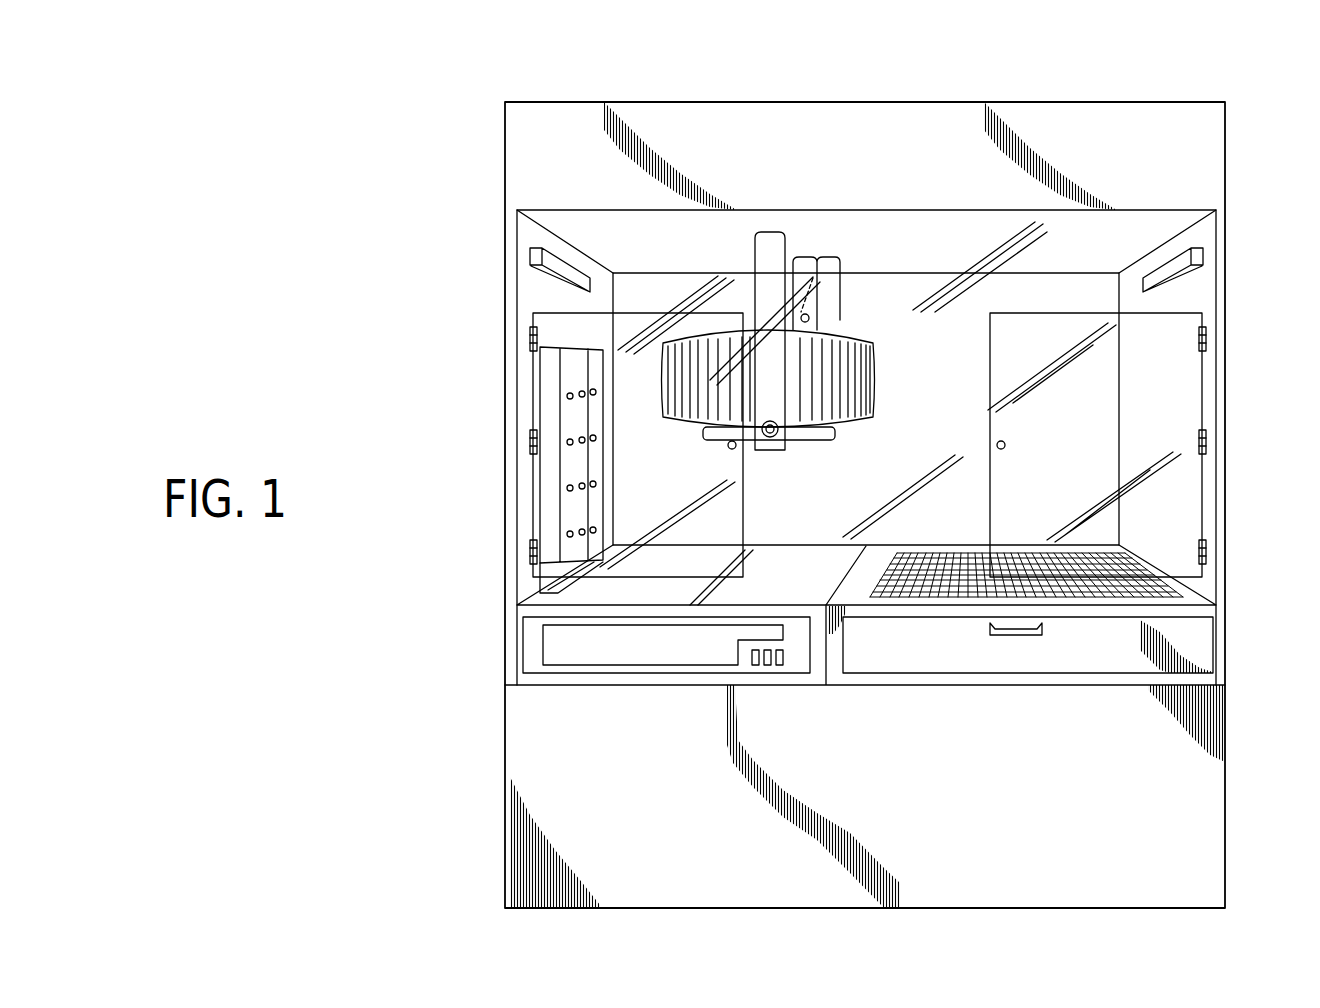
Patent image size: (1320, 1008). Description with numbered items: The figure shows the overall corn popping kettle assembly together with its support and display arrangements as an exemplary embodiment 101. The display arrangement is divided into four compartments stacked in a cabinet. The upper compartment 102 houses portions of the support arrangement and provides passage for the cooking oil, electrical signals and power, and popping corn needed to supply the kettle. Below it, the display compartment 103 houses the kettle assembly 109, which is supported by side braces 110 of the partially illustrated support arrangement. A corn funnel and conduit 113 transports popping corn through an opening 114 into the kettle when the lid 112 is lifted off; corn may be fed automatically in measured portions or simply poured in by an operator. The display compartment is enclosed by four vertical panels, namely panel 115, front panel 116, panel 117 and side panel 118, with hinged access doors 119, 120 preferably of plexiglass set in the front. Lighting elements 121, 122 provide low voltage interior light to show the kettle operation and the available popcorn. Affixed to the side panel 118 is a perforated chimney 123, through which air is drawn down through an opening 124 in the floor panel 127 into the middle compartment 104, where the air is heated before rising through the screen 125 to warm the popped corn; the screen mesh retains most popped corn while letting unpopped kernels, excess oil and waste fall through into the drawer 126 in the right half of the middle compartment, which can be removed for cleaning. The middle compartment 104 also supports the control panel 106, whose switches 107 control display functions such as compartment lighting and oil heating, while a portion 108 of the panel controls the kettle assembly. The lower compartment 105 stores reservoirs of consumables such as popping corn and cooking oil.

The exemplary embodiment 101 is at (423, 110).
The upper compartment 102 is at (505, 170).
The display compartment 103 is at (505, 445).
The middle compartment 104 is at (505, 647).
The lower compartment 105 is at (505, 800).
The control panel 106 is at (535, 655).
The switches 107 is at (765, 668).
The portion of the control panel 108 is at (622, 655).
The kettle assembly 109 is at (880, 382).
The side braces 110 is at (805, 260).
The lid 112 is at (850, 330).
The corn funnel and conduit 113 is at (833, 260).
The opening 114 is at (840, 284).
The panel 115 is at (871, 505).
The front panel 116 is at (1093, 435).
The front panel 117 is at (1182, 301).
The side panel 118 is at (533, 296).
The hinged access door 119 is at (728, 463).
The hinged access door 120 is at (1001, 455).
The lighting element 121 is at (1163, 263).
The lighting element 122 is at (566, 263).
The chimney 123 is at (567, 372).
The opening 124 is at (560, 566).
The screen 125 is at (960, 575).
The drawer 126 is at (1008, 655).
The panel 127 is at (792, 583).